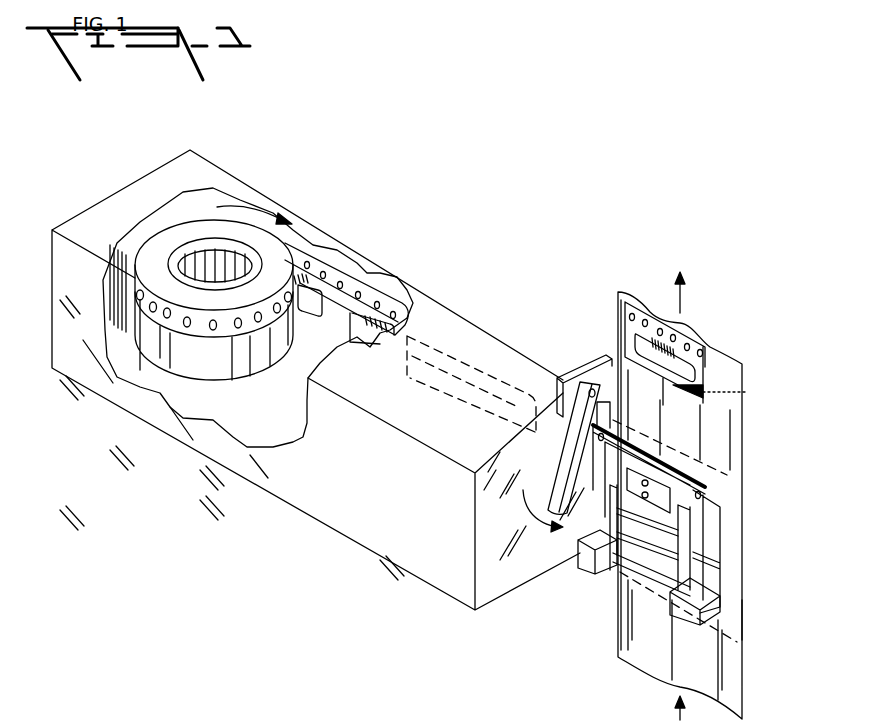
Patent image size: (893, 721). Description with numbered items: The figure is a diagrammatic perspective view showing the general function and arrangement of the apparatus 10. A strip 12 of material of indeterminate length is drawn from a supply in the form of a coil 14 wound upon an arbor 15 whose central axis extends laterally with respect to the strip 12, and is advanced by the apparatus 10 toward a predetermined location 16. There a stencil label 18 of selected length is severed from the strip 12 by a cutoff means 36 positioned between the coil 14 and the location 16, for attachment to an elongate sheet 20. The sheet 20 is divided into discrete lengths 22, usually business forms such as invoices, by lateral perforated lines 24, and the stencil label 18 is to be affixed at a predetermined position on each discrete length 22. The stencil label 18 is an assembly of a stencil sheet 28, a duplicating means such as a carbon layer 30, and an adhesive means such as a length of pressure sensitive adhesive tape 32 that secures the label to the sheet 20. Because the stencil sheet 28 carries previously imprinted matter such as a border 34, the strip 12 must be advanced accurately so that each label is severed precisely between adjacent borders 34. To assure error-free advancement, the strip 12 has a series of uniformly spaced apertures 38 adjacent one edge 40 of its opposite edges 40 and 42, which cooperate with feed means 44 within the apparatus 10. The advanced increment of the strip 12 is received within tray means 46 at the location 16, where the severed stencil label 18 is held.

The apparatus 10 is at (193, 450).
The strip 12 is at (328, 323).
The coil 14 is at (208, 377).
The arbor 15 is at (195, 247).
The predetermined location 16 is at (727, 528).
The stencil label 18 is at (713, 370).
The elongate sheet 20 is at (731, 621).
The discrete lengths 22 is at (742, 433).
The lateral perforated lines 24 is at (740, 478).
The stencil sheet 28 is at (630, 318).
The carbon layer 30 is at (747, 392).
The pressure sensitive adhesive tape 32 is at (710, 368).
The border 34 is at (292, 312).
The cutoff means 36 is at (558, 489).
The apertures 38 is at (343, 286).
The edge 40 is at (392, 300).
The edge 42 is at (343, 335).
The feed means 44 is at (467, 365).
The tray means 46 is at (720, 566).